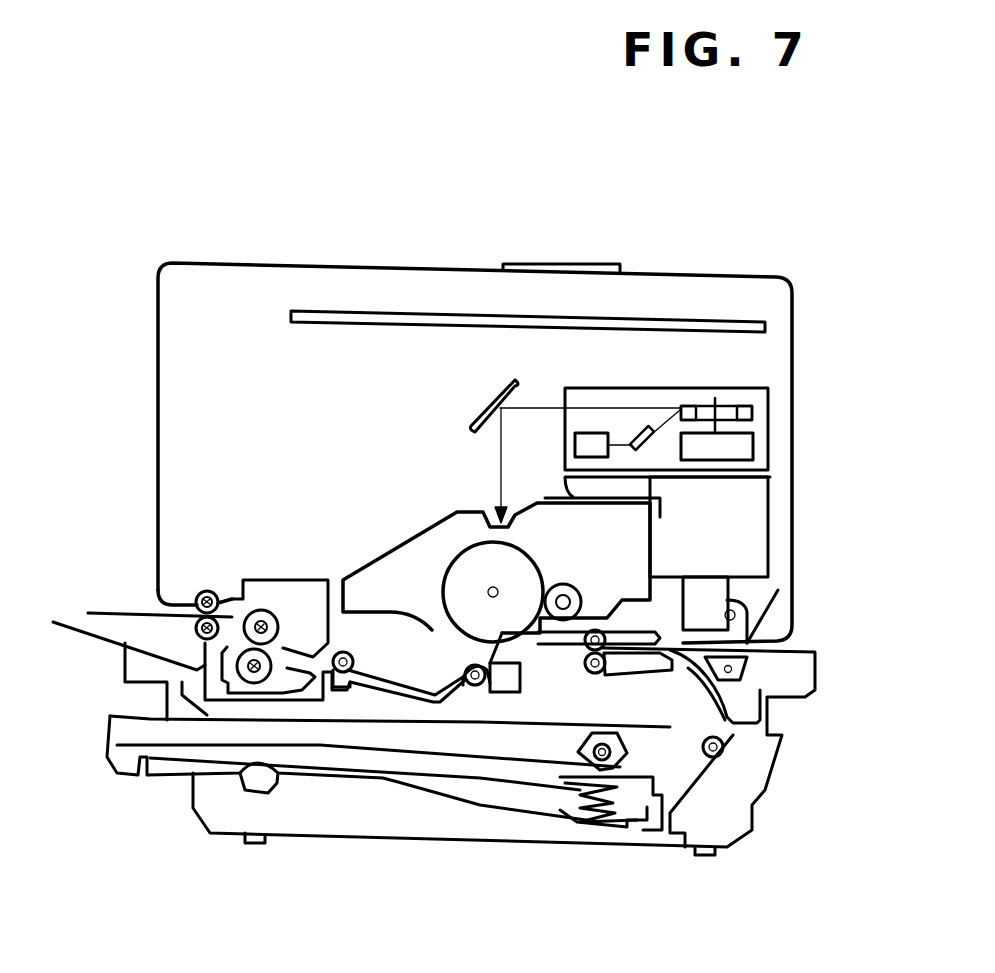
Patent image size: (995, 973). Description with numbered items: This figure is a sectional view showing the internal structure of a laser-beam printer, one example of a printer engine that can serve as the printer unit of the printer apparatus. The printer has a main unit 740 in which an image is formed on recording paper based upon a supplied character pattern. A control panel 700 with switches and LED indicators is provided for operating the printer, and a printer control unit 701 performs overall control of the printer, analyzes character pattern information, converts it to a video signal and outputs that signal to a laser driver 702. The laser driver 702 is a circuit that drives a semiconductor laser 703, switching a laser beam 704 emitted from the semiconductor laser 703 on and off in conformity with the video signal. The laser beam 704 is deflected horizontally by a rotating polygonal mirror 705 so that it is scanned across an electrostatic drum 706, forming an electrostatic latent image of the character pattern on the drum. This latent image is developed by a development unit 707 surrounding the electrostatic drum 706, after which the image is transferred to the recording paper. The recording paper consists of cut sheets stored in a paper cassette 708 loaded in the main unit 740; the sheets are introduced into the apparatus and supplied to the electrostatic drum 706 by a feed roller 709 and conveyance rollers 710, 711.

The control panel 700 is at (565, 263).
The main unit 740 is at (713, 277).
The printer control unit 701 is at (765, 327).
The laser driver 702 is at (575, 445).
The semiconductor laser 703 is at (652, 450).
The laser beam 704 is at (653, 412).
The rotating polygonal mirror 705 is at (752, 410).
The electrostatic drum 706 is at (462, 555).
The development unit 707 is at (390, 570).
The paper cassette 708 is at (108, 730).
The feed roller 709 is at (580, 757).
The conveyance roller 710 is at (713, 757).
The conveyance roller 711 is at (588, 672).